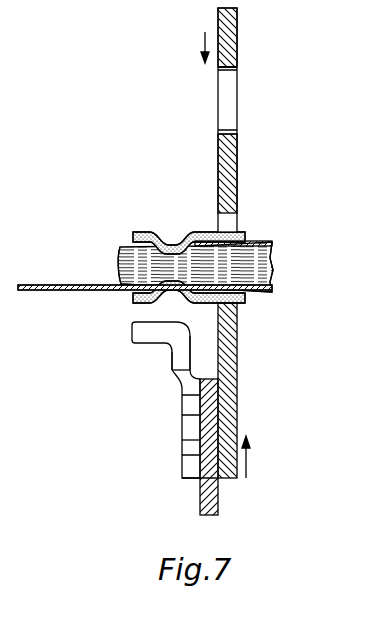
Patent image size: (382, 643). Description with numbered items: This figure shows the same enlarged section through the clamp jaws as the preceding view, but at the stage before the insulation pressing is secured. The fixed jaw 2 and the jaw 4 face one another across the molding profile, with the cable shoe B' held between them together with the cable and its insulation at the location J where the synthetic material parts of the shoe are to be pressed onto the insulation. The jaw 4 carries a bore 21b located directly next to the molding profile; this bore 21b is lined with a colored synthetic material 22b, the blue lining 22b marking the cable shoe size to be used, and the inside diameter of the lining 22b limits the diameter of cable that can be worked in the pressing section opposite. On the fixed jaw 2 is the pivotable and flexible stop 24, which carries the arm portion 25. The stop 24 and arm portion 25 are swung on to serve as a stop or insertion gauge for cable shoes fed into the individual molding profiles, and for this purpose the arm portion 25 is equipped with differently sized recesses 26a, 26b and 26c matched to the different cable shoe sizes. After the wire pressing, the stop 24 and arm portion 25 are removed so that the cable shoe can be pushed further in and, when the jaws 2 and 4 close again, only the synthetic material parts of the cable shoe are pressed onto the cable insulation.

The colored synthetic material lining 22b is at (218, 67).
The bore 21b is at (228, 105).
The jaw 4 is at (225, 160).
The sealing sleeve J is at (212, 237).
The elastic body B' is at (195, 244).
The recess 26c is at (182, 360).
The fixed jaw 2 is at (195, 388).
The recess 26b is at (190, 406).
The recess 26a is at (190, 448).
The arm portion 25 is at (190, 470).
The pivotable and flexible stop 24 is at (208, 500).